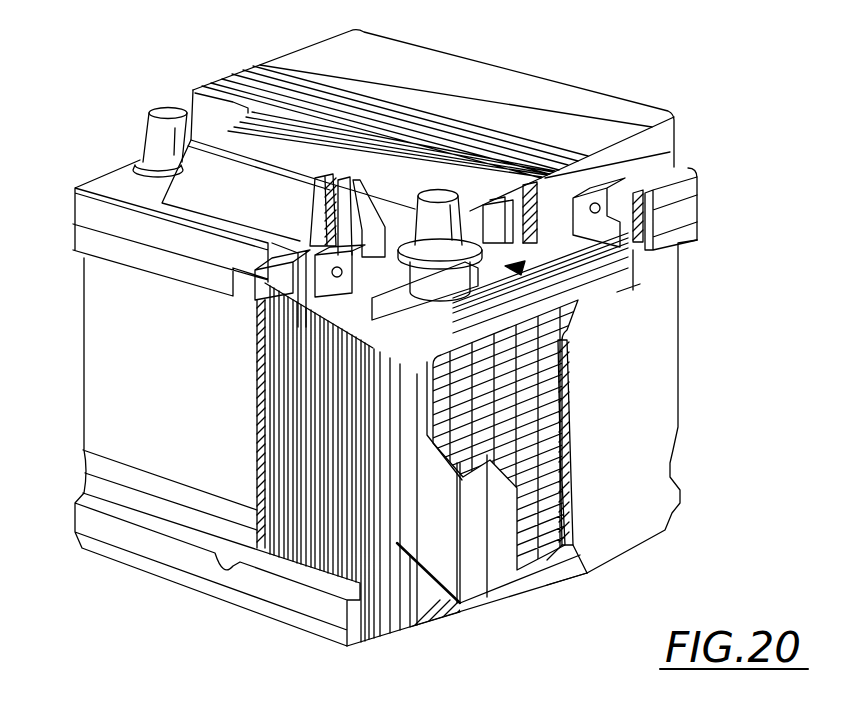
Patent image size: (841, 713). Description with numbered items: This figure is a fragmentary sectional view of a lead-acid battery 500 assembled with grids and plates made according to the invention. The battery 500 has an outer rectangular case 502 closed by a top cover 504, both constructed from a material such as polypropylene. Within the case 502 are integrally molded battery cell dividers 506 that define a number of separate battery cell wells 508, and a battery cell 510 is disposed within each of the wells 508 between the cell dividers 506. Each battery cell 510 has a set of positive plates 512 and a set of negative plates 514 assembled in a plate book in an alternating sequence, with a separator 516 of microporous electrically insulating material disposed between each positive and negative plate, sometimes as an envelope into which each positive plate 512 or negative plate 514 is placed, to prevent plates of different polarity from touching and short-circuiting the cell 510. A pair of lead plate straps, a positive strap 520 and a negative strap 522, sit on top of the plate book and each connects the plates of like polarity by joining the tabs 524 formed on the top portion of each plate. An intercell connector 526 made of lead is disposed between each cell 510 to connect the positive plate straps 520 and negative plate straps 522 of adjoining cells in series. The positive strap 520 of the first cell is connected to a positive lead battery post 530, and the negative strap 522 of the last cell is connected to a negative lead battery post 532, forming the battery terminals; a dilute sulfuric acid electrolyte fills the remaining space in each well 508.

The lead-acid battery 500 is at (681, 76).
The outer rectangular case 502 is at (663, 347).
The top cover 504 is at (103, 175).
The battery cell dividers 506 is at (268, 297).
The battery cell wells 508 is at (617, 295).
The battery cell 510 is at (551, 588).
The positive plates 512 is at (437, 603).
The negative plates 514 is at (553, 558).
The separator 516 is at (487, 595).
The positive plate strap 520 is at (275, 262).
The negative plate strap 522 is at (368, 218).
The tabs 524 is at (340, 307).
The intercell connector 526 is at (333, 245).
The positive lead battery post 530 is at (452, 190).
The negative lead battery post 532 is at (150, 108).